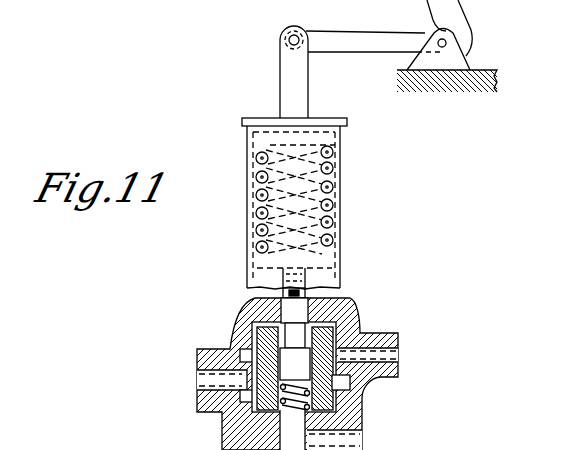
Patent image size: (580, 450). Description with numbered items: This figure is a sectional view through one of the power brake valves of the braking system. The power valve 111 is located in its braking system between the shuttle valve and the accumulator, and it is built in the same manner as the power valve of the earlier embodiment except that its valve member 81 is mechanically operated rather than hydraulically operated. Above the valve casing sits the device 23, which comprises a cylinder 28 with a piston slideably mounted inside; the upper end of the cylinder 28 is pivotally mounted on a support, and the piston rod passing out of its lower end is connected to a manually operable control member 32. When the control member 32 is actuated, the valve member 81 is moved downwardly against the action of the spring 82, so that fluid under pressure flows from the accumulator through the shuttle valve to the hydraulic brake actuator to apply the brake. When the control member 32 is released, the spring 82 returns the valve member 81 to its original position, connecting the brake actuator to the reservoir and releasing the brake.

The manually operable control member 32 is at (360, 44).
The device 23 is at (351, 212).
The cylinder 28 is at (338, 268).
The valve member 81 is at (295, 364).
The spring 82 is at (298, 418).
The power valve 111 is at (401, 350).